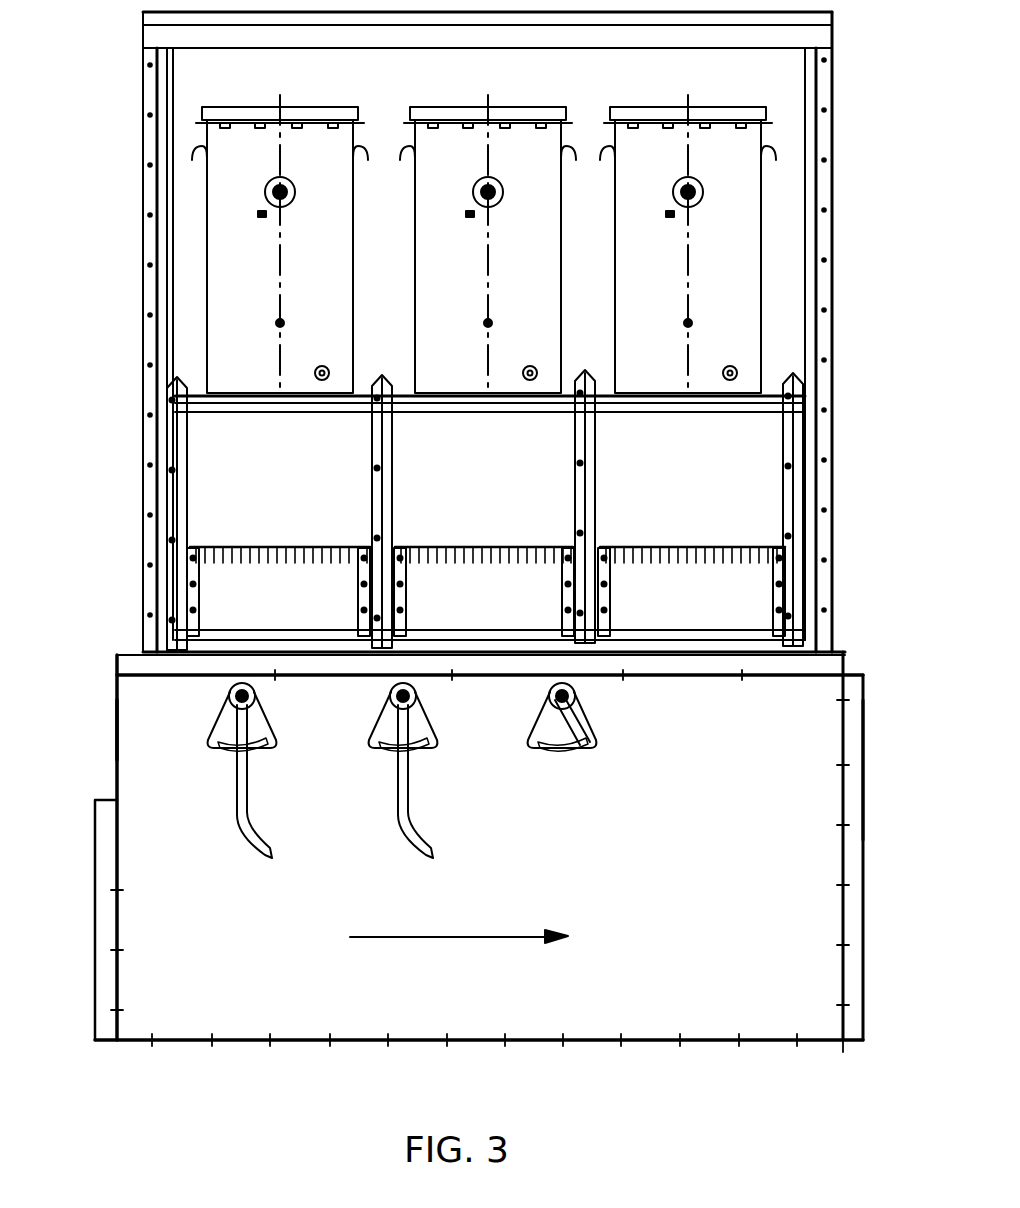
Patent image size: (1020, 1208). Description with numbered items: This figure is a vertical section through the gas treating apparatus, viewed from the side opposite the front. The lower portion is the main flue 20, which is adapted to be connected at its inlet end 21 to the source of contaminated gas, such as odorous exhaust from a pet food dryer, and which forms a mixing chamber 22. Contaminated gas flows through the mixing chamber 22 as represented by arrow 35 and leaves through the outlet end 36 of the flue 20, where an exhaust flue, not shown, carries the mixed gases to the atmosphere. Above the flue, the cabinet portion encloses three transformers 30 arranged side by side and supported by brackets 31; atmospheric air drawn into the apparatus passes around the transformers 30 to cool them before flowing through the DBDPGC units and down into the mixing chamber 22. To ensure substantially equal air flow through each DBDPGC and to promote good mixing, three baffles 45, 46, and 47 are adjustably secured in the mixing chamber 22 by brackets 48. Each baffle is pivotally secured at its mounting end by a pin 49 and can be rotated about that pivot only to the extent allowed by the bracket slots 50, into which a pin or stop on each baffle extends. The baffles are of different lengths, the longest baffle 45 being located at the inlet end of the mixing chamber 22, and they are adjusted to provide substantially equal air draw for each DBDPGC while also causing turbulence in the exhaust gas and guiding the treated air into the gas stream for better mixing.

The main flue 20 is at (283, 1050).
The inlet end 21 is at (115, 722).
The mixing chamber 22 is at (736, 875).
The transformers 30 is at (478, 107).
The brackets 31 is at (760, 418).
The arrow 35 is at (450, 945).
The outlet end 36 is at (863, 832).
The baffle 45 is at (232, 812).
The baffle 46 is at (393, 812).
The baffle 47 is at (590, 728).
The brackets 48 is at (220, 730).
The pins 49 is at (228, 696).
The bracket slots 50 is at (218, 745).